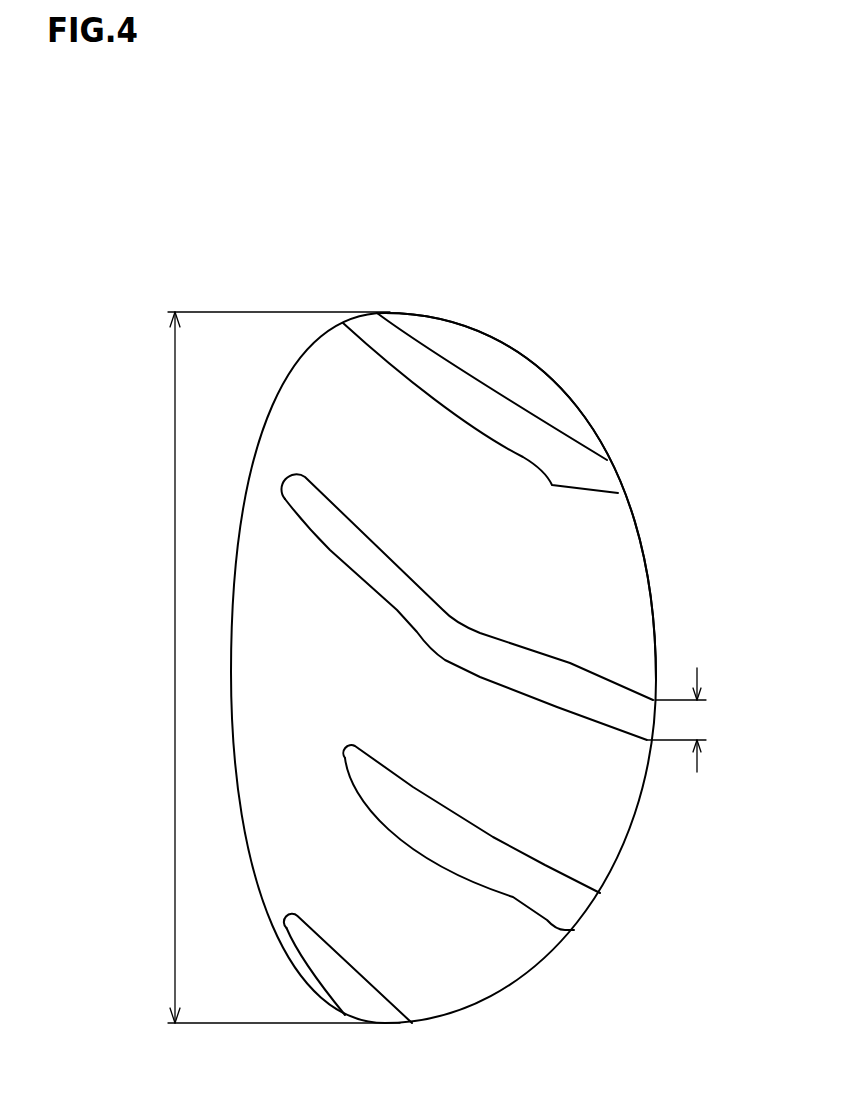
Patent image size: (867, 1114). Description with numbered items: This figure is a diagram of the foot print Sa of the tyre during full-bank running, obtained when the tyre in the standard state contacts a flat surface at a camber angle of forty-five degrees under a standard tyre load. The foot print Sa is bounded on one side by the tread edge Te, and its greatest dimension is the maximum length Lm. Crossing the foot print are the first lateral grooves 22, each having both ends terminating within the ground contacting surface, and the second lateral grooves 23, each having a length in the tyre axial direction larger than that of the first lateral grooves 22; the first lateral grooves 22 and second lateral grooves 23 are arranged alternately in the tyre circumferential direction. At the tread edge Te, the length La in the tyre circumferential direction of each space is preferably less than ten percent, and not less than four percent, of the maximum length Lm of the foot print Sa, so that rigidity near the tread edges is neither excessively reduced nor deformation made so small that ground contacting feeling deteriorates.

The first lateral grooves 22 is at (483, 412).
The second lateral grooves 23 is at (473, 653).
The foot print Sa is at (583, 417).
The tread edge Te is at (655, 668).
The maximum length of the foot print Lm is at (265, 667).
The length in the tyre circumferential direction of each of the spaces La is at (691, 720).